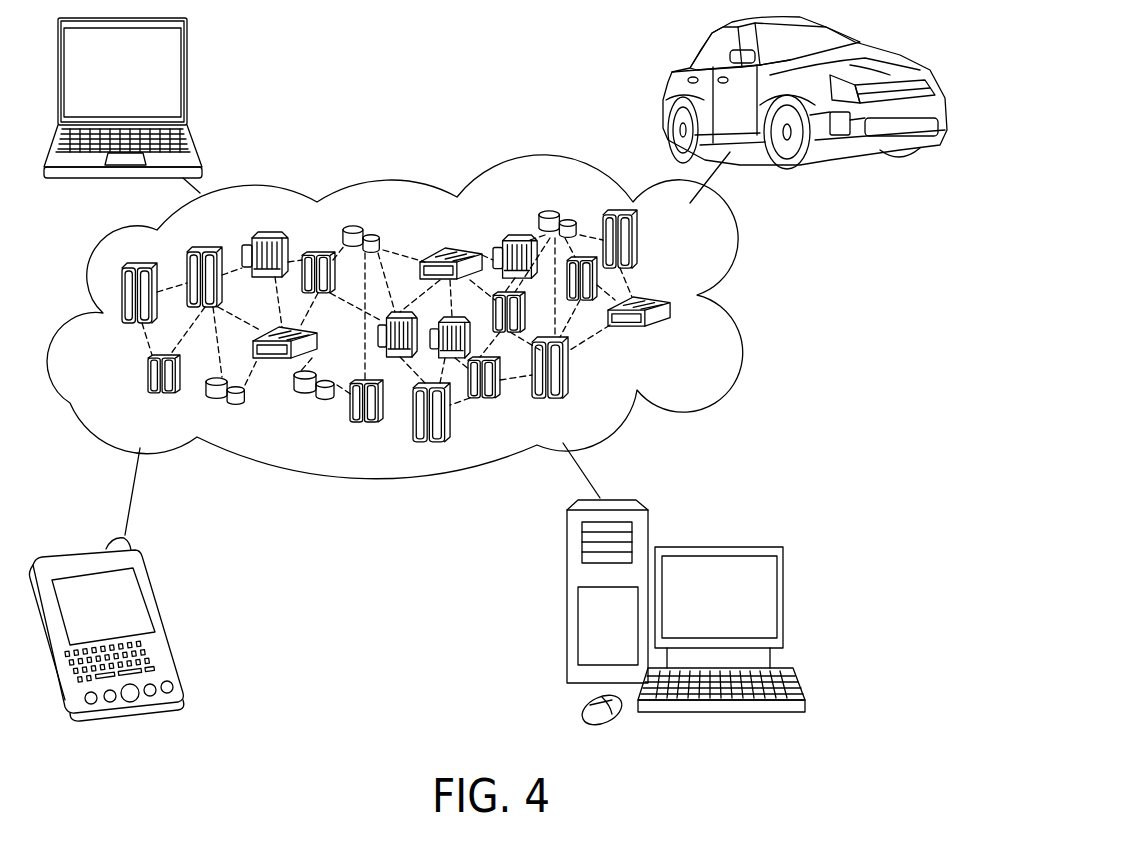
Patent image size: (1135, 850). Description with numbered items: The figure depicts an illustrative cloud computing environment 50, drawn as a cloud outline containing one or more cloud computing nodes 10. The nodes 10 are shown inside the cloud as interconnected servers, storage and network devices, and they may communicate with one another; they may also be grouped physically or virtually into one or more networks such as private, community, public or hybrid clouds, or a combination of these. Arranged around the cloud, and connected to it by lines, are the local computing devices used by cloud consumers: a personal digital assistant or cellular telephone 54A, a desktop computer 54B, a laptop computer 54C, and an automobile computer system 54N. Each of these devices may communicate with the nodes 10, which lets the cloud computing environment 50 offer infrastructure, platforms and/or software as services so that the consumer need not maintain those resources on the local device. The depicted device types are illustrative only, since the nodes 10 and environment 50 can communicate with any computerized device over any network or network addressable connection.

The cloud computing node 10 is at (694, 350).
The cloud computing environment 50 is at (737, 243).
The personal digital assistant or cellular telephone 54A is at (157, 597).
The desktop computer 54B is at (785, 597).
The laptop computer 54C is at (187, 78).
The automobile computer system 54N is at (855, 42).